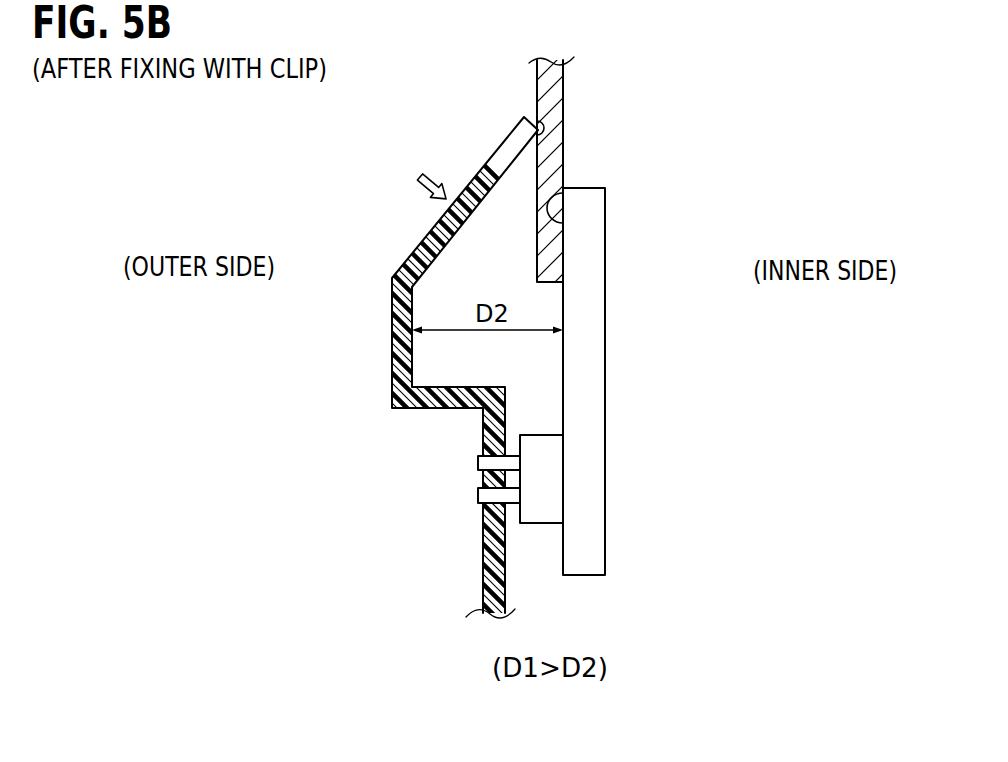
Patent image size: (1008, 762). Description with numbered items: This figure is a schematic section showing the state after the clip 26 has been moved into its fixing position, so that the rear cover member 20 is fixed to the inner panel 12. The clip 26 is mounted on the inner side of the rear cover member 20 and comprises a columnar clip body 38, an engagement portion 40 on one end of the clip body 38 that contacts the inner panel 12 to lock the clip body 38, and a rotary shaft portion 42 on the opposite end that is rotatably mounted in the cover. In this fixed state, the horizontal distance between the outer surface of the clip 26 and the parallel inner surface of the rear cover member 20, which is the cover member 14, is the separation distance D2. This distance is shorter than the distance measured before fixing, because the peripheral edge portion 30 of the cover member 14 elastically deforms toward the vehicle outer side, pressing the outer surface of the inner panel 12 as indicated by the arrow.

The inner panel 12 is at (573, 98).
The cover member 14 is at (384, 340).
The rear cover member 20 is at (484, 375).
The clip 26 is at (612, 373).
The peripheral edge portion 30 is at (542, 128).
The clip body 38 is at (593, 418).
The engagement portion 40 is at (565, 216).
The rotary shaft portion 42 is at (534, 536).